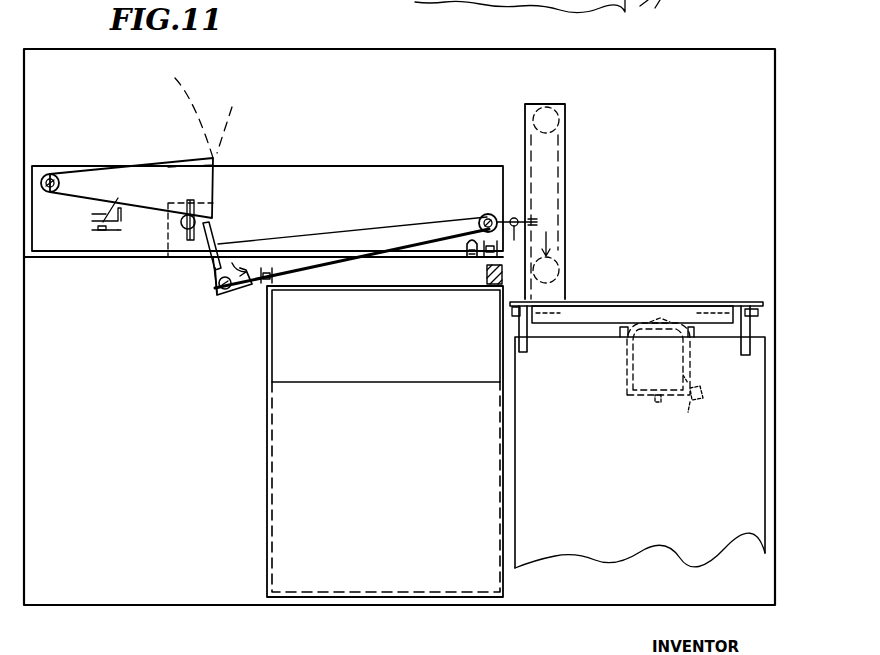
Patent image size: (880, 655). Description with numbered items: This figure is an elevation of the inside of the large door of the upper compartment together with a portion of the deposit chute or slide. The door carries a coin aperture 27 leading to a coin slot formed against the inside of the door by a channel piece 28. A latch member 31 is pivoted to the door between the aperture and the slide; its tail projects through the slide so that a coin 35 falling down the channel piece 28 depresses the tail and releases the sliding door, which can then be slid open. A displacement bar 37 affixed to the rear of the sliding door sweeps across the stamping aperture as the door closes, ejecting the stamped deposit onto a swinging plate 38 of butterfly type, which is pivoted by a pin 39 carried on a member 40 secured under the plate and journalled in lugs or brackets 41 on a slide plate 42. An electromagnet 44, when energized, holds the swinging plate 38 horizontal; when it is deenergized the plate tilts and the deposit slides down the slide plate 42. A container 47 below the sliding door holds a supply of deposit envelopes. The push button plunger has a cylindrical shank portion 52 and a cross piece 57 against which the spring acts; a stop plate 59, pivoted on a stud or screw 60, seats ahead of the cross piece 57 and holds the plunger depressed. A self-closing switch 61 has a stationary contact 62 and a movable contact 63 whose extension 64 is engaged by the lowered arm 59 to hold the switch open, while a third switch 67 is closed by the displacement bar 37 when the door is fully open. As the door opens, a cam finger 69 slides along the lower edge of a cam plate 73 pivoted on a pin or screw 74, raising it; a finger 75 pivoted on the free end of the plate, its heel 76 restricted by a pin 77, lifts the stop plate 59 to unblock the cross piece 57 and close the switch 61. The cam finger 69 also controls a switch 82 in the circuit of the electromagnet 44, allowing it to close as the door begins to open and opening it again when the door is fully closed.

The coin aperture 27 is at (549, 118).
The channel piece 28 is at (548, 181).
The latch member 31 is at (506, 217).
The coin 35 is at (549, 270).
The displacement bar 37 is at (503, 277).
The swinging plate 38 is at (676, 303).
The pin 39 is at (513, 316).
The member 40 is at (612, 312).
The lugs or brackets 41 is at (527, 345).
The slide plate 42 is at (668, 543).
The electromagnet 44 is at (650, 372).
The container 47 is at (470, 425).
The cylindrical shank portion 52 is at (181, 223).
The cross piece 57 is at (190, 200).
The stop plate 59 is at (98, 183).
The stud or screw 60 is at (51, 176).
The self-closing switch 61 is at (93, 224).
The stationary contact 62 is at (121, 200).
The movable contact 63 is at (109, 235).
The extension 64 is at (143, 212).
The third switch 67 is at (275, 288).
The cam finger 69 is at (469, 258).
The cam plate 73 is at (381, 236).
The pin or screw 74 is at (488, 214).
The finger 75 is at (213, 268).
The heel 76 is at (233, 289).
The pin 77 is at (237, 265).
The switch 82 is at (486, 258).